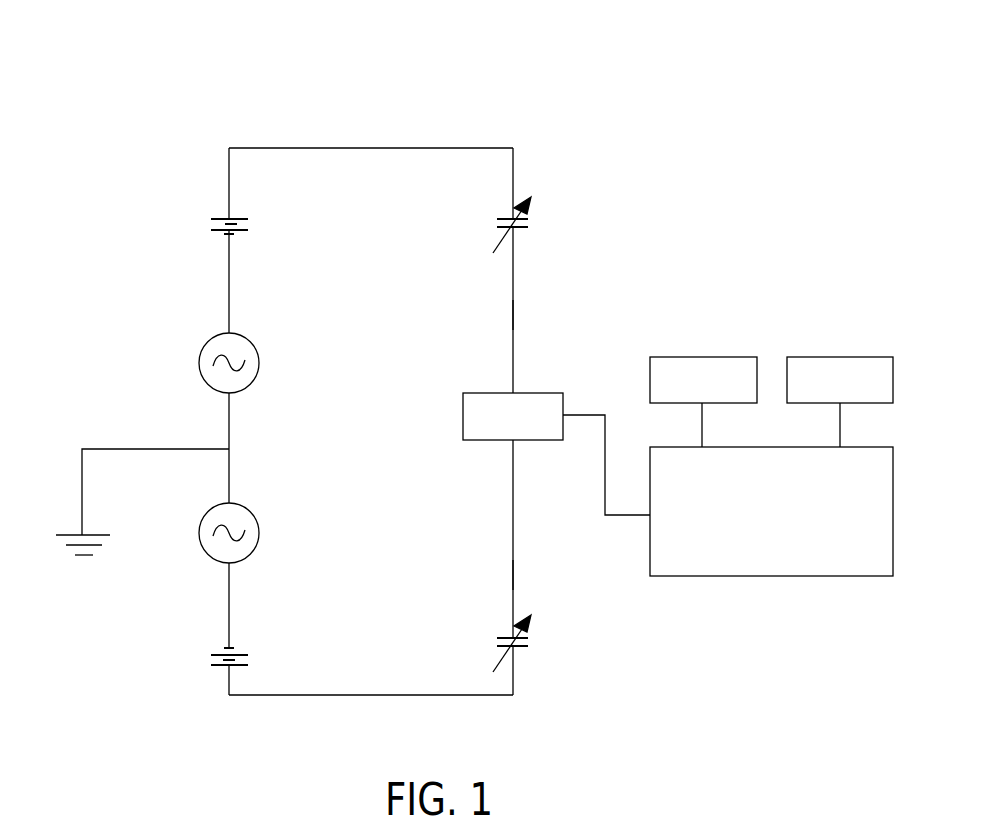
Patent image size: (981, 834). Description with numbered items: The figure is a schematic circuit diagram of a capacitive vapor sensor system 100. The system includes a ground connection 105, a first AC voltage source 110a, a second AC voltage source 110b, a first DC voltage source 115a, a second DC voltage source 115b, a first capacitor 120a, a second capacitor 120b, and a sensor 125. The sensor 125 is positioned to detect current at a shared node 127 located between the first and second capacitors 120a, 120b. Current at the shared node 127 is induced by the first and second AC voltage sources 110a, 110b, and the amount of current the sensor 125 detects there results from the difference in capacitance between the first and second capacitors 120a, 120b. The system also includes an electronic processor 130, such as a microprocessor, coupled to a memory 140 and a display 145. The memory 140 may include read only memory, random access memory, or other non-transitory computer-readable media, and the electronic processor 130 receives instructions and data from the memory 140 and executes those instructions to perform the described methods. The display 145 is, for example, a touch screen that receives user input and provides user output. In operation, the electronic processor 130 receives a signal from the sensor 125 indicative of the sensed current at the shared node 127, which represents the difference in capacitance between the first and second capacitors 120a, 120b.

The capacitive vapor sensor system 100 is at (420, 80).
The ground connection 105 is at (84, 558).
The first alternating current voltage source 110a is at (259, 365).
The second alternating current voltage source 110b is at (259, 535).
The first direct current voltage source 115a is at (250, 229).
The second direct current voltage source 115b is at (250, 660).
The first capacitor 120a is at (532, 226).
The second capacitor 120b is at (530, 642).
The sensor 125 is at (545, 440).
The shared node 127 is at (515, 330).
The electronic processor 130 is at (770, 576).
The memory 140 is at (705, 355).
The display 145 is at (843, 355).